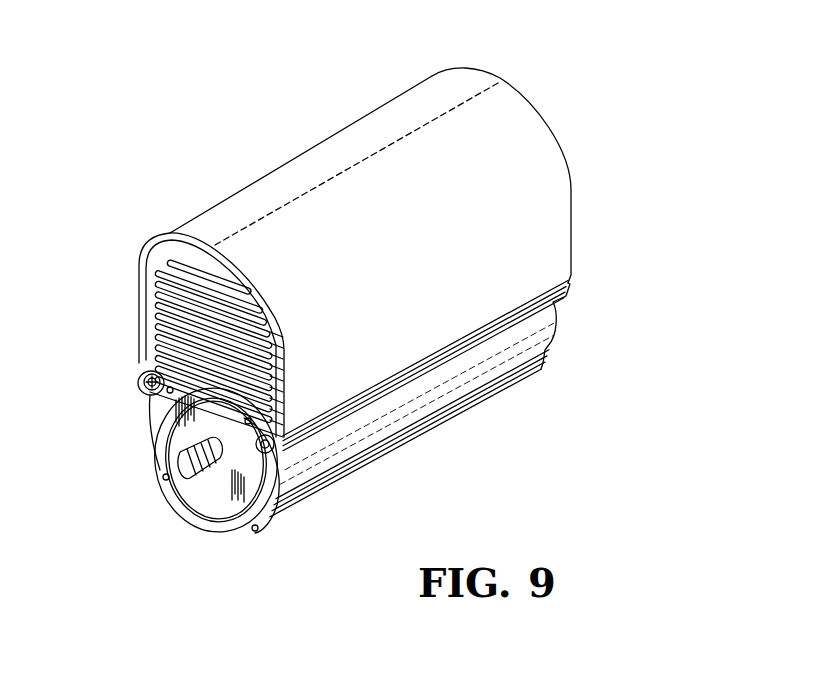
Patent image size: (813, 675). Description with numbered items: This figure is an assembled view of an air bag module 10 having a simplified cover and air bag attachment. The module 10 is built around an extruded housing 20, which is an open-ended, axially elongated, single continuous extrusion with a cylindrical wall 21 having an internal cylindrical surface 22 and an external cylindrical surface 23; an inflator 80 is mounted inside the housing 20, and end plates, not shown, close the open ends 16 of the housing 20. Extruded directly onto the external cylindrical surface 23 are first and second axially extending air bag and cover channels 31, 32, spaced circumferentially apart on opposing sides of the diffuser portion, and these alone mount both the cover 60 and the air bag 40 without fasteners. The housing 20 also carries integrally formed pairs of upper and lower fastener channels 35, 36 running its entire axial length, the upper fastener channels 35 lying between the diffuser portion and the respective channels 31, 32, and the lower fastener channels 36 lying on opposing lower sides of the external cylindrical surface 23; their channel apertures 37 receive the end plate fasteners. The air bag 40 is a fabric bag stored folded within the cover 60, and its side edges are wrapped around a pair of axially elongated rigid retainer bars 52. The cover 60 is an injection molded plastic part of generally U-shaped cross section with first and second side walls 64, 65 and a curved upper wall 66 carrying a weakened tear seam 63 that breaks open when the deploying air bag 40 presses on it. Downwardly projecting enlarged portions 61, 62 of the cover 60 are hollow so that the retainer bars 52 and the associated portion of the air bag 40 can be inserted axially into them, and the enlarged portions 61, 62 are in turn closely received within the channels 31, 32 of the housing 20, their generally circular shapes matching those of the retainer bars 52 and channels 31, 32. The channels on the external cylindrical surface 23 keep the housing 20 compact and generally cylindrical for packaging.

The air bag module 10 is at (473, 452).
The open ends 16 is at (250, 520).
The extruded housing 20 is at (185, 508).
The cylindrical wall 21 is at (215, 522).
The internal cylindrical surface 22 is at (50, 8).
The external cylindrical surface 23 is at (290, 460).
The first air bag and cover channel 31 is at (488, 340).
The second air bag and cover channel 32 is at (147, 381).
The upper fastener channels 35 is at (157, 372).
The lower fastener channels 36 is at (484, 397).
The channel apertures 37 is at (159, 462).
The air bag 40 is at (196, 268).
The air bag retainer bars 52 is at (150, 386).
The cover 60 is at (370, 107).
The first enlarged portion 61 is at (294, 447).
The second enlarged portion 62 is at (152, 387).
The weakened tear seam 63 is at (487, 92).
The first side wall 64 is at (547, 240).
The second side wall 65 is at (148, 278).
The curved upper wall 66 is at (426, 100).
The inflator 80 is at (160, 452).